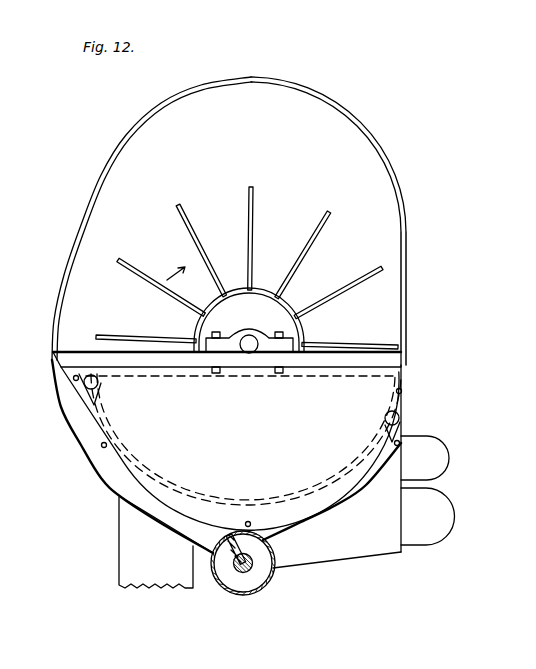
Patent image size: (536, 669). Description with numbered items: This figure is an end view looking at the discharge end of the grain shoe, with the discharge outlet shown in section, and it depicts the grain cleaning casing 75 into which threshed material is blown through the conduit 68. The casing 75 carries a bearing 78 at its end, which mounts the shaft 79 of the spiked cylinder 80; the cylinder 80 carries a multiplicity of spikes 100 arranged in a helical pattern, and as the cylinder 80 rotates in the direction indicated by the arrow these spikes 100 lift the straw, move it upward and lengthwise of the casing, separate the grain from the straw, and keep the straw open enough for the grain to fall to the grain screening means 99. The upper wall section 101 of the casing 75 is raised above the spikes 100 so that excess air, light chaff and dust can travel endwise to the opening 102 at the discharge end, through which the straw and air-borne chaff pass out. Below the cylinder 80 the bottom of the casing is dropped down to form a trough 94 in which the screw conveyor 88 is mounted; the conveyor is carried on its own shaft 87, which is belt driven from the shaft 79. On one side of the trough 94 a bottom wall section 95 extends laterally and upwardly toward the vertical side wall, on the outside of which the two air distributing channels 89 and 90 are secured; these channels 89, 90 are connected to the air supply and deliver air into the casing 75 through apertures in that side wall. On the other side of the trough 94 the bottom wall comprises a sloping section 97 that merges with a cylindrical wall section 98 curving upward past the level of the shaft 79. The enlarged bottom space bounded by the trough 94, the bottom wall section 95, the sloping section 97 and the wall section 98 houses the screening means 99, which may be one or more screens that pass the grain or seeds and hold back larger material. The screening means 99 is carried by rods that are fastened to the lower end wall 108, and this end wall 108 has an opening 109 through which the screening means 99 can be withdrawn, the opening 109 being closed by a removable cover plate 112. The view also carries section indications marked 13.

The upper wall section 101 is at (245, 79).
The opening 102 is at (122, 158).
The grain cleaning casing 75 is at (62, 270).
The spikes 100 is at (171, 244).
The spiked cylinder 80 is at (234, 287).
The bearing 78 is at (252, 329).
The shaft 79 is at (248, 345).
The side wall 13 is at (388, 333).
The cylindrical wall section 98 is at (63, 408).
The removable cover plate 112 is at (120, 465).
The grain screening means 99 is at (227, 495).
The opening 109 is at (287, 512).
The sloping section 97 is at (165, 525).
The conduit 68 is at (120, 539).
The lower end wall 108 is at (325, 550).
The bottom wall section 95 is at (356, 558).
The screw conveyor 88 is at (247, 586).
The shaft 87 is at (251, 570).
The trough 94 is at (243, 594).
The air distributing channel 89 is at (449, 462).
The air distributing channel 90 is at (445, 528).